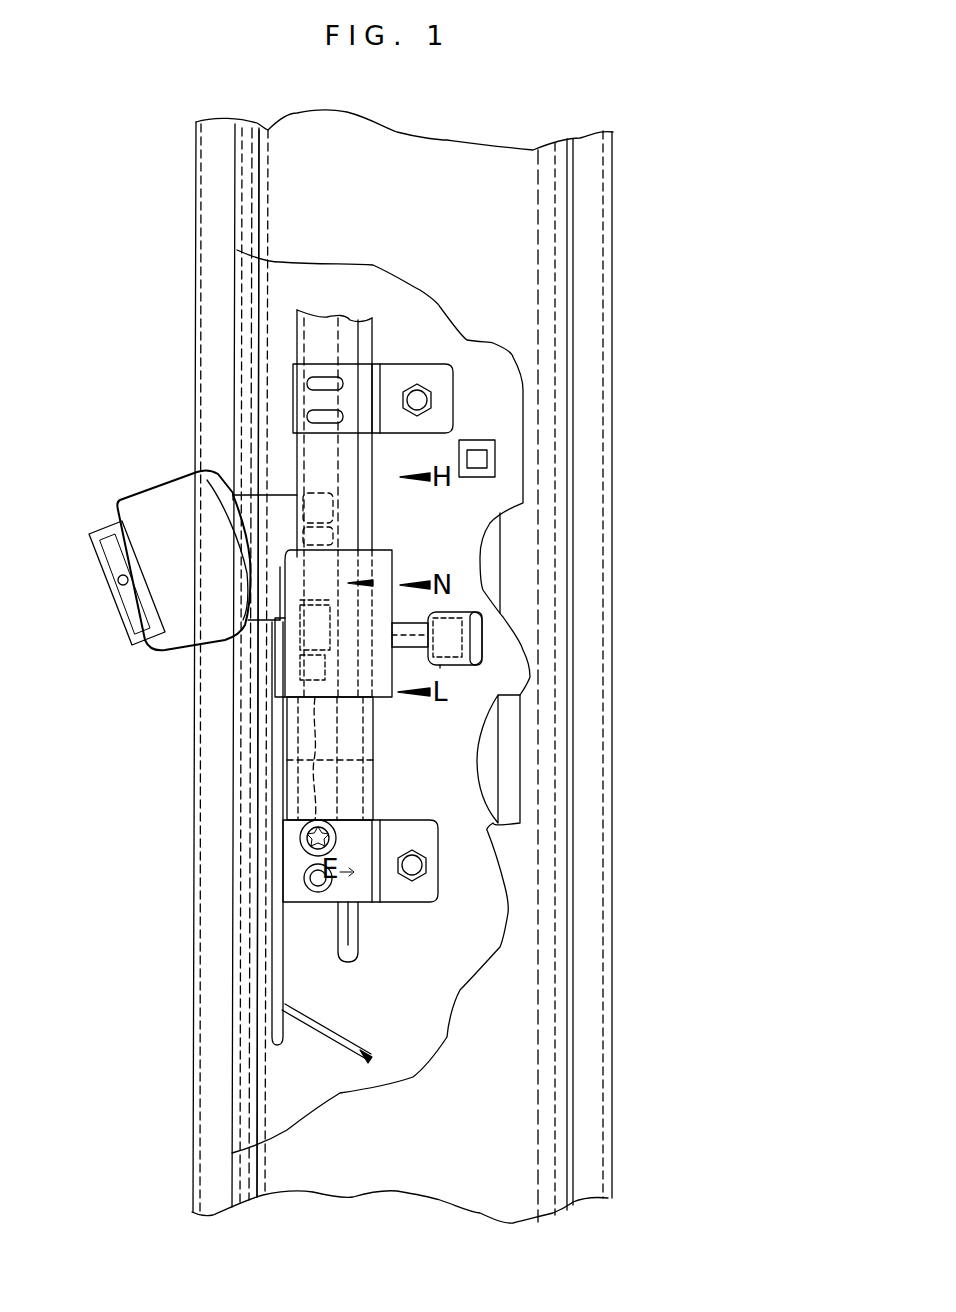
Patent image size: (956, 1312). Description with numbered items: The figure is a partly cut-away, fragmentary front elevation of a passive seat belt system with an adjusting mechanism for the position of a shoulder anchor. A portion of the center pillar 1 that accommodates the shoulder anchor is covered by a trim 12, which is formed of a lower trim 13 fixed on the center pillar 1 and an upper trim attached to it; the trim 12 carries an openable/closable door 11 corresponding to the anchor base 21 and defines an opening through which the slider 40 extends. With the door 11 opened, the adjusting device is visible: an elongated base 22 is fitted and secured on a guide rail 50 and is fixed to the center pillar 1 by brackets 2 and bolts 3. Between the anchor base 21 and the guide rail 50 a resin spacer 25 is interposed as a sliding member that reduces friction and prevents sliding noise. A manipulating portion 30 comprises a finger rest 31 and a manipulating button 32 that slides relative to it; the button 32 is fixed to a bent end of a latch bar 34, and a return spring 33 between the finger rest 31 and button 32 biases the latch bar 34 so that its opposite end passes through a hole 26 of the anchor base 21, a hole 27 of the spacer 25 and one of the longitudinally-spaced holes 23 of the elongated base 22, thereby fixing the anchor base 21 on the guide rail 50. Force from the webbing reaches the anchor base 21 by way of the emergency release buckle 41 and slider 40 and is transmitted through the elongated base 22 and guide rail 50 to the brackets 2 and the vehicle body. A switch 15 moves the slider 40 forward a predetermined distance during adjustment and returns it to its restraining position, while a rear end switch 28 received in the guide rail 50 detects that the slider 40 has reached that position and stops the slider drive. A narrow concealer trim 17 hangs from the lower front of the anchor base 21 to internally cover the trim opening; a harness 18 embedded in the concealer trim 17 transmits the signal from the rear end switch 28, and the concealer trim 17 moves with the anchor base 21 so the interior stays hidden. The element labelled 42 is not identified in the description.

The center pillar 1 is at (287, 285).
The brackets 2 is at (387, 375).
The bolts 3 is at (420, 393).
The openable/closable door 11 is at (483, 772).
The trim 12 is at (507, 1003).
The lower trim 13 is at (305, 935).
The switch 15 is at (468, 440).
The concealer trim 17 is at (273, 747).
The harness 18 is at (335, 1037).
The anchor base 21 is at (393, 552).
The elongated base 22 is at (373, 795).
The longitudinally-spaced holes 23 is at (370, 553).
The spacer 25 is at (373, 750).
The hole 26 is at (385, 655).
The hole 27 is at (363, 620).
The rear end switch 28 is at (283, 668).
The manipulating portion 30 is at (482, 666).
The finger rest 31 is at (488, 612).
The manipulating button 32 is at (440, 666).
The return spring 33 is at (472, 608).
The latch bar 34 is at (437, 610).
The slider 40 is at (280, 497).
The emergency release buckle 41 is at (120, 497).
The cable 42 is at (135, 640).
The guide rail 50 is at (328, 313).